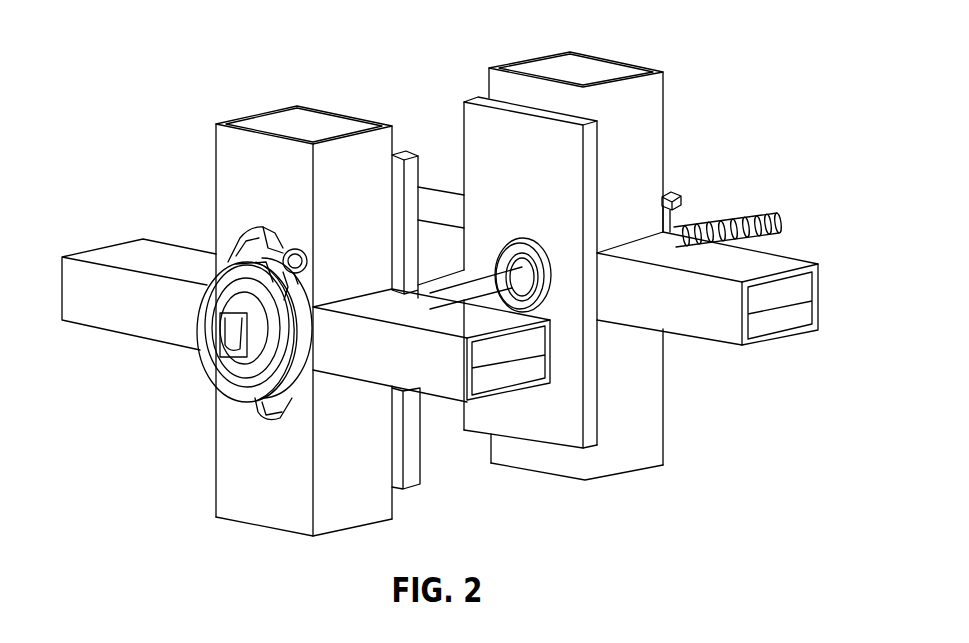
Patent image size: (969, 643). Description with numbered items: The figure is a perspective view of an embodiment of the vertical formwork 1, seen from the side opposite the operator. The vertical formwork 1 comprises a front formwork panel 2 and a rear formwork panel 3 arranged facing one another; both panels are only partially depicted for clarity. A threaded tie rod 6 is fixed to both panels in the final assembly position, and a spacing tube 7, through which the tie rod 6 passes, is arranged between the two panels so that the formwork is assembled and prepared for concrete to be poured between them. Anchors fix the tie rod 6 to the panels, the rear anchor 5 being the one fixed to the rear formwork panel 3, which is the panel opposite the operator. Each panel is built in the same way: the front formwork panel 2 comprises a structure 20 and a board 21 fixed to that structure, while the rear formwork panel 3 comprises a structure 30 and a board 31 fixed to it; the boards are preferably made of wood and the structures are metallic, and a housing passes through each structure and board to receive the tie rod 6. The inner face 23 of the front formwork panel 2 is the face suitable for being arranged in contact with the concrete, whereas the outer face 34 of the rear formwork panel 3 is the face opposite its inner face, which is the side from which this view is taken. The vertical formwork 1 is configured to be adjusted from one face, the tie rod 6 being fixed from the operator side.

The vertical formwork 1 is at (402, 98).
The front formwork panel 2 is at (668, 53).
The rear formwork panel 3 is at (191, 117).
The rear anchor 5 is at (250, 355).
The threaded tie rod 6 is at (727, 228).
The spacing tube 7 is at (468, 287).
The structure 20 is at (597, 250).
The board 21 is at (592, 151).
The inner face 23 is at (498, 168).
The structure 30 is at (260, 155).
The board 31 is at (413, 473).
The outer face 34 is at (246, 197).